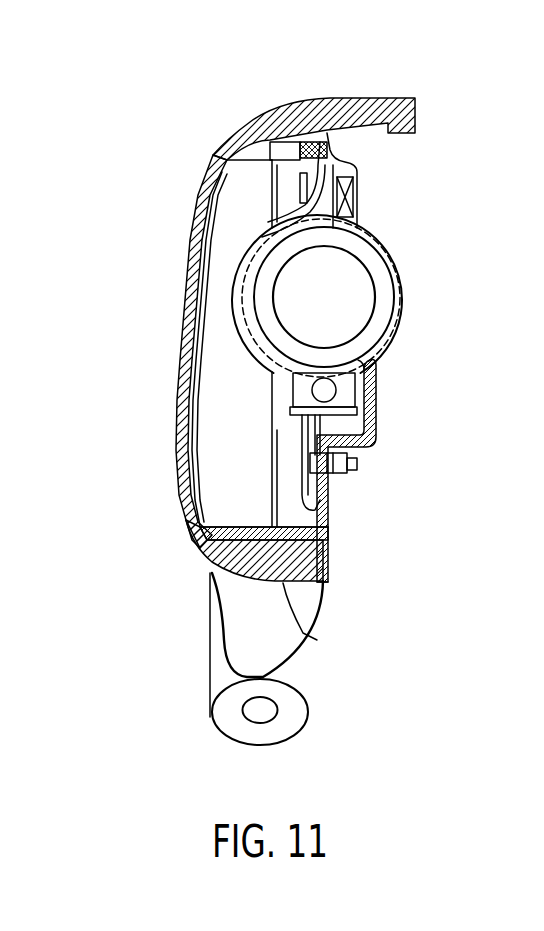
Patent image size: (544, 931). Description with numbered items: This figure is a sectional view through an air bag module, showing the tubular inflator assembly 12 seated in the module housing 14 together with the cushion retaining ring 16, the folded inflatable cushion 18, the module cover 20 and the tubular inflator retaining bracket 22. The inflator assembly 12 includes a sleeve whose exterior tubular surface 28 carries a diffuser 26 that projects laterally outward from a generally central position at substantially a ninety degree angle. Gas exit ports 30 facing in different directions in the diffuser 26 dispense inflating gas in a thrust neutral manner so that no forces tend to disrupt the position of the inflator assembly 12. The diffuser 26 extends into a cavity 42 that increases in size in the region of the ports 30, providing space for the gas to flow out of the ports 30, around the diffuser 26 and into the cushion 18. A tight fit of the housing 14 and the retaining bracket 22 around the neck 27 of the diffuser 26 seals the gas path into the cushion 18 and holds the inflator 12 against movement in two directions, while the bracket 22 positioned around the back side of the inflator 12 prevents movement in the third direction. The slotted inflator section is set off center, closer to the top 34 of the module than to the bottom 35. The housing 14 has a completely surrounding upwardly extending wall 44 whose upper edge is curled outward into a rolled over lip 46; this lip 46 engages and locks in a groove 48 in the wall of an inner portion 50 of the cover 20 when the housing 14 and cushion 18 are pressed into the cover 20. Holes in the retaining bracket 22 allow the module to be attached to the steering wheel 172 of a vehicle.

The tubular inflator assembly 12 is at (355, 270).
The module housing 14 is at (328, 529).
The cushion retaining ring 16 is at (237, 270).
The folded inflatable cushion 18 is at (297, 509).
The module cover 20 is at (207, 183).
The tubular inflator retaining bracket 22 is at (402, 282).
The diffuser 26 is at (372, 397).
The neck 27 is at (372, 370).
The exterior tubular surface 28 is at (297, 382).
The gas exit ports 30 is at (370, 428).
The top 34 is at (383, 98).
The bottom 35 is at (303, 633).
The cavity 42 is at (353, 427).
The upwardly extending wall 44 is at (325, 547).
The rolled over lip 46 is at (200, 528).
The groove 48 is at (325, 573).
The inner portion 50 is at (207, 548).
The steering wheel 172 is at (227, 720).